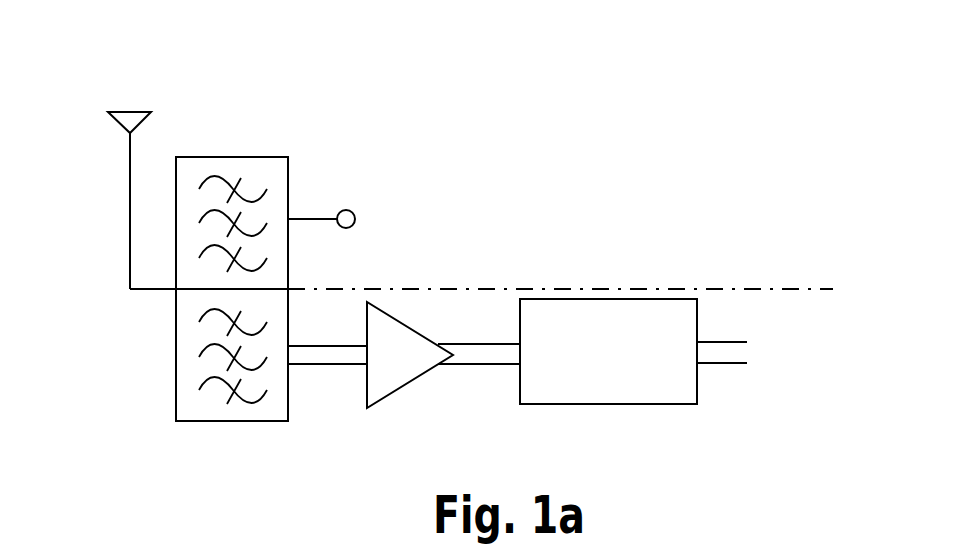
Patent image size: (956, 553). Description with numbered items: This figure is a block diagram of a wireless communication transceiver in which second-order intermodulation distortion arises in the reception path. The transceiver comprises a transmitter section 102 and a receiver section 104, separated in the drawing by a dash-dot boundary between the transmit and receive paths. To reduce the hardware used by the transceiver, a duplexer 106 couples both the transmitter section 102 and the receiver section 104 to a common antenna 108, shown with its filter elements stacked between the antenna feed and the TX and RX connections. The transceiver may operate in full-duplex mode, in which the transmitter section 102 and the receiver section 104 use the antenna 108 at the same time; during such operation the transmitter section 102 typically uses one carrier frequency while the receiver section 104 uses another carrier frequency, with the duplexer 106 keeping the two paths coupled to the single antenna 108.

The transmitter section 102 is at (800, 330).
The receiver section 104 is at (800, 423).
The duplexer 106 is at (243, 157).
The antenna 108 is at (154, 76).